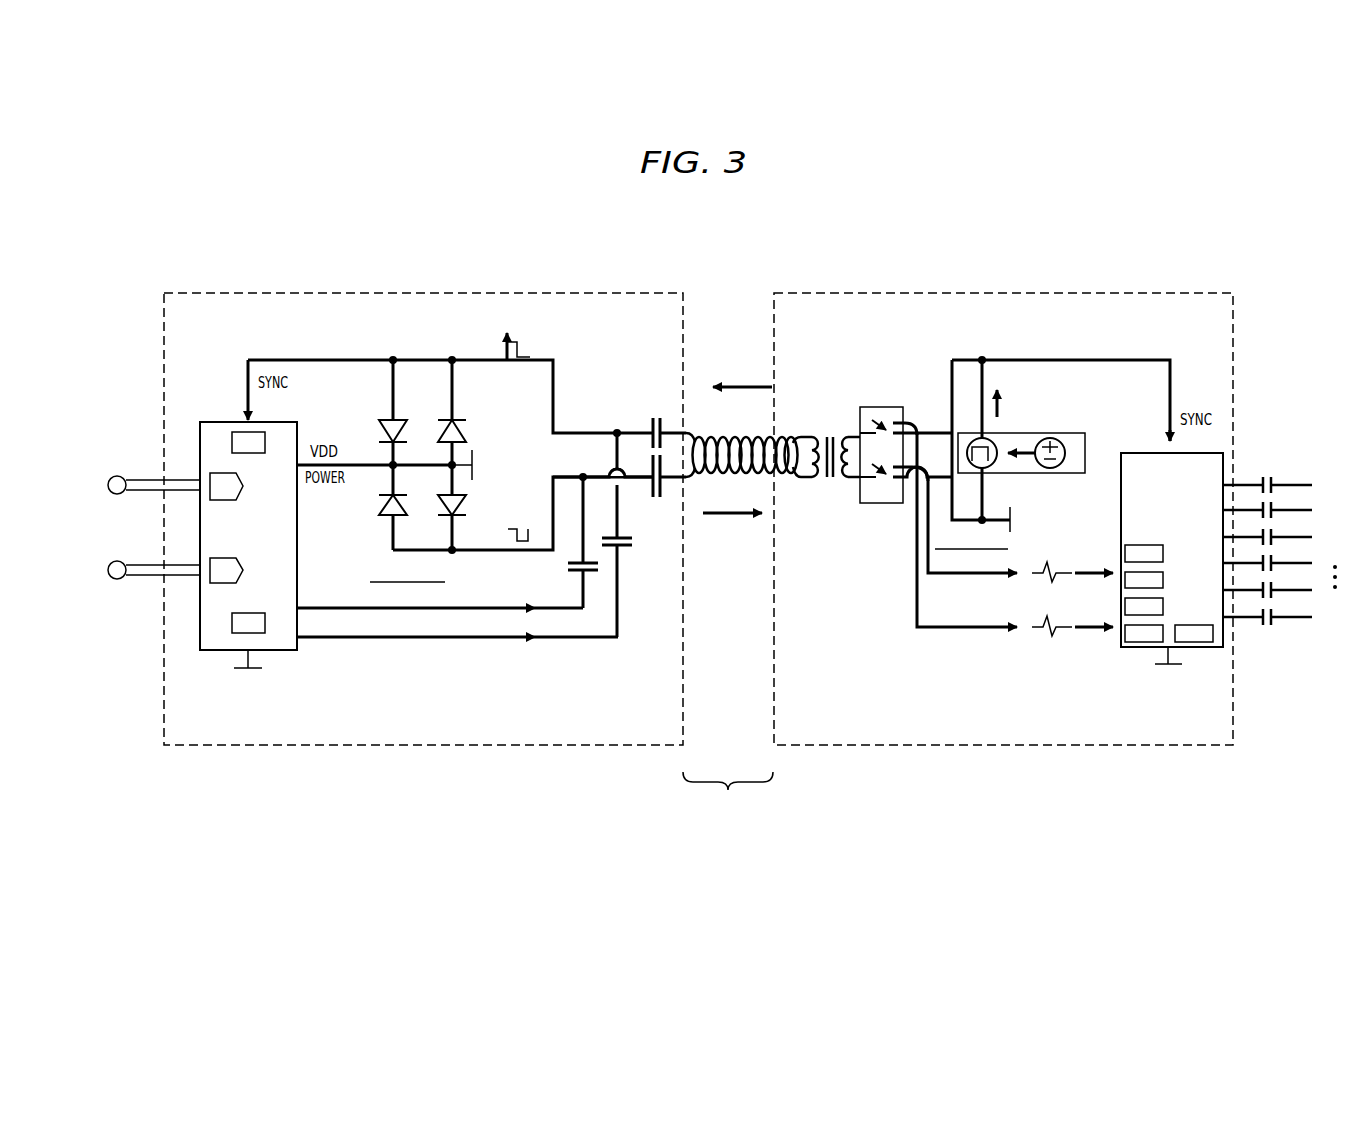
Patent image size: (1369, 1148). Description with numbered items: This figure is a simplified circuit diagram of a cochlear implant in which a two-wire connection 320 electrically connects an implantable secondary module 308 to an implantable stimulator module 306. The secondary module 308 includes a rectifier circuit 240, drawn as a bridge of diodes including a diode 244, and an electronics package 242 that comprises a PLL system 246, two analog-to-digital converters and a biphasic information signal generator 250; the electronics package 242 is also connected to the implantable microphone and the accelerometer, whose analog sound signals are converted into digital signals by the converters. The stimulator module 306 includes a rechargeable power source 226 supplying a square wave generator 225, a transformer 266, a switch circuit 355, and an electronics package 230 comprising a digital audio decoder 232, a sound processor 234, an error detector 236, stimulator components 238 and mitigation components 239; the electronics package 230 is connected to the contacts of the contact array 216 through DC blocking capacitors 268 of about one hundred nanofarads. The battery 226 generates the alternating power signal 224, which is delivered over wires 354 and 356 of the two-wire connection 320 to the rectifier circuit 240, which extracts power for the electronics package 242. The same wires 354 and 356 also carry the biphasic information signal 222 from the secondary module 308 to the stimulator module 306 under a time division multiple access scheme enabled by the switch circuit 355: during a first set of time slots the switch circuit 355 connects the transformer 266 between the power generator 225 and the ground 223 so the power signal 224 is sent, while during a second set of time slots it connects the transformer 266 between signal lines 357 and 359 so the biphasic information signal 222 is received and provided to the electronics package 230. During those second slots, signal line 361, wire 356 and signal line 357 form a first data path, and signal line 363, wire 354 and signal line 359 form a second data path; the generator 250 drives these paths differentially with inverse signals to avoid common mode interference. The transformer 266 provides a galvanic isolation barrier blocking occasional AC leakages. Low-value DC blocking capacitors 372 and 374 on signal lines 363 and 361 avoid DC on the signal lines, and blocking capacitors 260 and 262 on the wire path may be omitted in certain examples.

The implantable secondary module 308 is at (232, 292).
The implantable stimulator module 306 is at (1167, 292).
The electronics package 242 is at (272, 545).
The PLL system 246 is at (266, 442).
The biphasic information signal generator 250 is at (267, 624).
The rectifier circuit 240 is at (450, 427).
The diode D3 244 is at (455, 418).
The blocking capacitor 260 is at (662, 420).
The blocking capacitor 262 is at (675, 490).
The DC blocking capacitor 372 is at (598, 576).
The DC blocking capacitor 374 is at (630, 548).
The signal line 363 is at (484, 606).
The signal line 361 is at (490, 641).
The wire 354 is at (691, 431).
The wire 356 is at (788, 433).
The alternating power signal 224 is at (757, 385).
The biphasic information signal 222 is at (733, 520).
The two-wire connection 320 is at (726, 821).
The transformer 266 is at (850, 406).
The switch circuit 355 is at (878, 504).
The ground 223 is at (1013, 520).
The square wave generator 225 is at (1050, 426).
The rechargeable power source 226 is at (1075, 452).
The signal line 359 is at (926, 583).
The signal line 357 is at (942, 632).
The electronics package 230 is at (1150, 580).
The digital audio decoder 232 is at (1164, 556).
The sound processor 234 is at (1164, 582).
The error detector 236 is at (1164, 608).
The stimulator components 238 is at (1121, 636).
The mitigation components 239 is at (1202, 648).
The contact array 216 is at (1348, 466).
The DC blocking capacitors 268 is at (1282, 466).